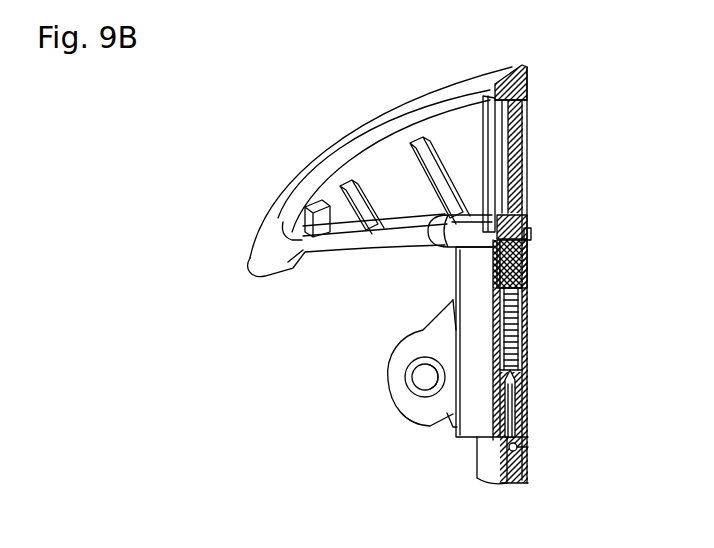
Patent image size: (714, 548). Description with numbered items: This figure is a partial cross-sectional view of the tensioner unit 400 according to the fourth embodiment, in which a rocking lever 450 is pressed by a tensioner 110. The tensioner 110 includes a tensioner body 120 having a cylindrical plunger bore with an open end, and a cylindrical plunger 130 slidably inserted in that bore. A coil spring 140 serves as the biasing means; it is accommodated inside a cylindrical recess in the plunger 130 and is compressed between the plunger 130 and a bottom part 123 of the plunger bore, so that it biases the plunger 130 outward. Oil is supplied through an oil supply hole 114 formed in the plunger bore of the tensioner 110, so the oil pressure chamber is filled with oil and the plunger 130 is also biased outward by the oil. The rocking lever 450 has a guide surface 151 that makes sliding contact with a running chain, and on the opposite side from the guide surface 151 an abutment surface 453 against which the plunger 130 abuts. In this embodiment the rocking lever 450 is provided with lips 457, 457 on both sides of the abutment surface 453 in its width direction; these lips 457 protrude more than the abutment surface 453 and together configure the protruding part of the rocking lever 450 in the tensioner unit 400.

The tensioner unit 400 is at (204, 177).
The rocking lever 450 is at (336, 137).
The lip 457 is at (472, 249).
The guide surface 151 is at (510, 73).
The abutment surface 453 is at (531, 229).
The plunger 130 is at (540, 250).
The tensioner body 120 is at (537, 338).
The coil spring 140 is at (534, 361).
The bottom part 123 is at (534, 401).
The oil supply hole 114 is at (534, 446).
The tensioner 110 is at (372, 391).